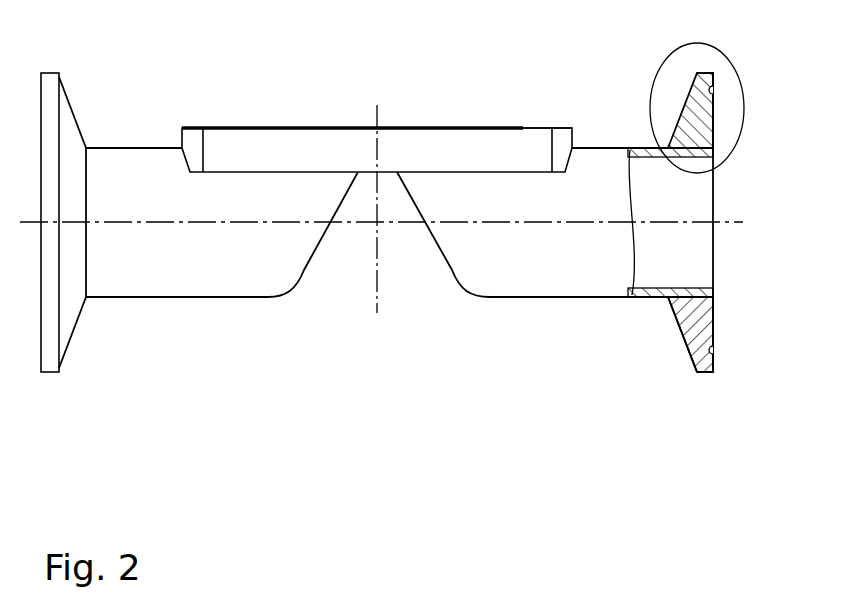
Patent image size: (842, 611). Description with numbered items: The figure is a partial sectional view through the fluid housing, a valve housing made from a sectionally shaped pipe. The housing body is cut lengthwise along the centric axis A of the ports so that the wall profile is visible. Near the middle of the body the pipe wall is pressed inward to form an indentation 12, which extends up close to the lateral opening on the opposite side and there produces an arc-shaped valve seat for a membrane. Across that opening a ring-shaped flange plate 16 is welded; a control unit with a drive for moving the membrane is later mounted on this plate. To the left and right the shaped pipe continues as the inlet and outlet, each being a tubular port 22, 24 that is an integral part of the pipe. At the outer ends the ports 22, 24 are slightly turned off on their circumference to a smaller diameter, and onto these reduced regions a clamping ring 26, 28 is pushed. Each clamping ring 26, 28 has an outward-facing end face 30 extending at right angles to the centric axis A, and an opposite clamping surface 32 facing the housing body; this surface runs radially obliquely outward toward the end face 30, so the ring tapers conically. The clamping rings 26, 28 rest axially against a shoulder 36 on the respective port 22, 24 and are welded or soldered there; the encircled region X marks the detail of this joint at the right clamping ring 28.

The indentation 12 is at (410, 257).
The flange plate 16 is at (226, 138).
The tubular port 22 is at (150, 262).
The tubular port 24 is at (549, 262).
The clamping ring 26 is at (67, 303).
The clamping ring 28 is at (702, 333).
The end face 30 is at (714, 303).
The clamping surface 32 is at (680, 322).
The shoulder 36 is at (667, 298).
The centric axis A is at (196, 224).
The detail region X is at (691, 108).